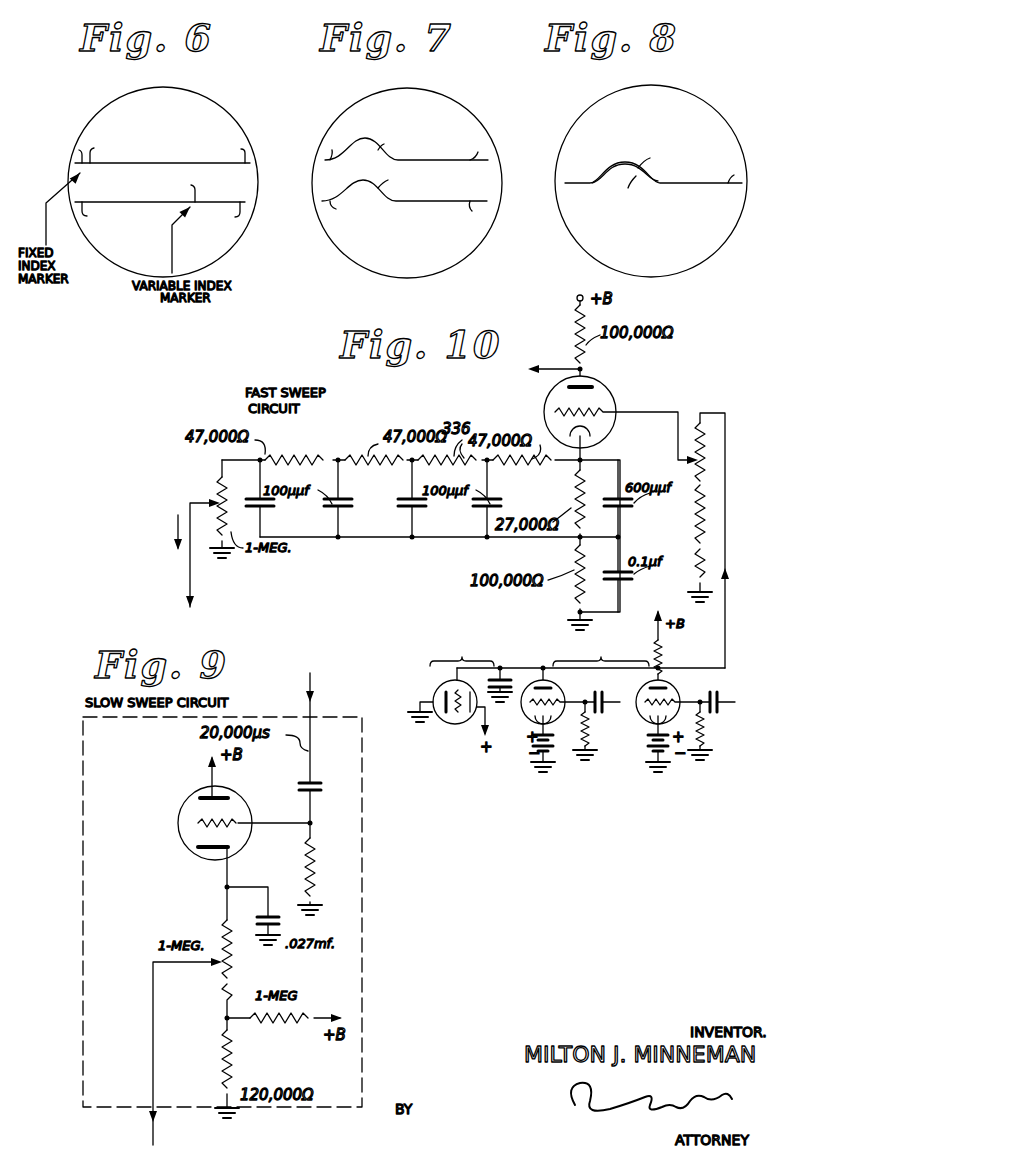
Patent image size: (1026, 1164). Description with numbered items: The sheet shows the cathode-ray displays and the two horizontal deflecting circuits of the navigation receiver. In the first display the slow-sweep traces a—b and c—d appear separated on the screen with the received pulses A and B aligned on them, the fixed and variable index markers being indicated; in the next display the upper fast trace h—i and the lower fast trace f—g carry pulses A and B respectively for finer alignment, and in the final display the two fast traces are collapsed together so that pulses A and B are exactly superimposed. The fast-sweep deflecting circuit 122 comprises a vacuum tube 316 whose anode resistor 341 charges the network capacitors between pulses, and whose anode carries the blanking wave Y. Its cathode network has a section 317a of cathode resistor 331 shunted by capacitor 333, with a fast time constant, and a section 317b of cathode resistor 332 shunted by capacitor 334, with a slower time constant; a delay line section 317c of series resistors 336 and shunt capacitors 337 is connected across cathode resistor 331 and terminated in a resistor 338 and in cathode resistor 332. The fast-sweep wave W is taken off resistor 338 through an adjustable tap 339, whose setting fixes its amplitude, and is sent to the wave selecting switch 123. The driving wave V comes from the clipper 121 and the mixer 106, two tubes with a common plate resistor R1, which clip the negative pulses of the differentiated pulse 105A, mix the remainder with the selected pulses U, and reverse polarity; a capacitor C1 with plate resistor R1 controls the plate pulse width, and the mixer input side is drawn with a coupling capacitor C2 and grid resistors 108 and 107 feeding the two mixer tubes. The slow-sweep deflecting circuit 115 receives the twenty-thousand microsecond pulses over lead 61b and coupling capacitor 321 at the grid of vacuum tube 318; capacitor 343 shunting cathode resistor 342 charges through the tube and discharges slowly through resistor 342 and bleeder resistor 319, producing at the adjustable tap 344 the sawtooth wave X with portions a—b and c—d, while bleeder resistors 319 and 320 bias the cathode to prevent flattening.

In FIG. 6, the slow-sweep trace start point c is at (80, 150).
In FIG. 6, the received pulse A is at (100, 144).
In FIG. 7, the received pulse A is at (386, 136).
In FIG. 6, the slow-sweep trace end point d is at (235, 148).
In FIG. 6, the slow-sweep trace start point a is at (92, 214).
In FIG. 8, the slow-sweep trace start point a is at (624, 189).
In FIG. 6, the received pulse B is at (185, 183).
In FIG. 7, the received pulse B is at (393, 176).
In FIG. 8, the received pulse B is at (652, 156).
In FIG. 6, the slow-sweep trace end point b is at (231, 216).
In FIG. 7, the upper fast trace start point h is at (336, 144).
In FIG. 7, the upper fast trace end point i is at (471, 144).
In FIG. 7, the lower fast trace start point f is at (338, 210).
In FIG. 8, the lower fast trace start point f is at (573, 166).
In FIG. 7, the lower fast trace end point g is at (475, 212).
In FIG. 8, the lower fast trace end point g is at (721, 170).
In FIG. 10, the fast-sweep deflecting circuit 122 is at (452, 397).
In FIG. 10, the series resistors 336 is at (330, 458).
In FIG. 10, the shunt capacitors 337 is at (324, 515).
In FIG. 10, the delay line section 317c is at (386, 531).
In FIG. 10, the terminating resistor 338 is at (215, 478).
In FIG. 10, the adjustable tap 339 is at (215, 500).
In FIG. 10, the fast-sweep deflecting wave W is at (187, 585).
In FIG. 10, the wave selecting switch 123 is at (192, 600).
In FIG. 10, the anode resistor 341 is at (576, 328).
In FIG. 10, the blanking wave Y is at (552, 359).
In FIG. 10, the vacuum tube 316 is at (546, 398).
In FIG. 10, the cathode resistor 331 is at (571, 495).
In FIG. 10, the network section 317a is at (612, 531).
In FIG. 10, the cathode resistor 332 is at (571, 567).
In FIG. 10, the network section 317b is at (612, 609).
In FIG. 10, the capacitor 333 is at (628, 508).
In FIG. 10, the capacitor 334 is at (625, 584).
In FIG. 10, the mixed clipped wave V is at (708, 408).
In FIG. 10, the clipper 121 is at (500, 657).
In FIG. 10, the mixer 106 is at (601, 654).
In FIG. 10, the capacitor C1 is at (508, 681).
In FIG. 10, the differentiated pulse 105A is at (582, 694).
In FIG. 10, the capacitor C2 is at (606, 702).
In FIG. 10, the resistor 108 is at (590, 720).
In FIG. 10, the plate resistor R1 is at (662, 656).
In FIG. 10, the resistor 107 / mixer output tube 107 is at (702, 722).
In FIG. 10, the selected pulse wave U is at (682, 700).
In FIG. 9, the slow-sweep deflecting circuit 115 is at (83, 822).
In FIG. 9, the lead 61b is at (316, 712).
In FIG. 9, the coupling capacitor 321 is at (313, 784).
In FIG. 9, the vacuum tube 318 is at (180, 802).
In FIG. 9, the capacitor 343 is at (270, 912).
In FIG. 9, the cathode resistor 342 is at (220, 927).
In FIG. 9, the adjustable tap 344 is at (214, 966).
In FIG. 9, the slow-sweep sawtooth wave X is at (150, 1138).
In FIG. 9, the bleeder resistor 320 is at (297, 1029).
In FIG. 9, the bleeder resistor 319 is at (220, 1068).